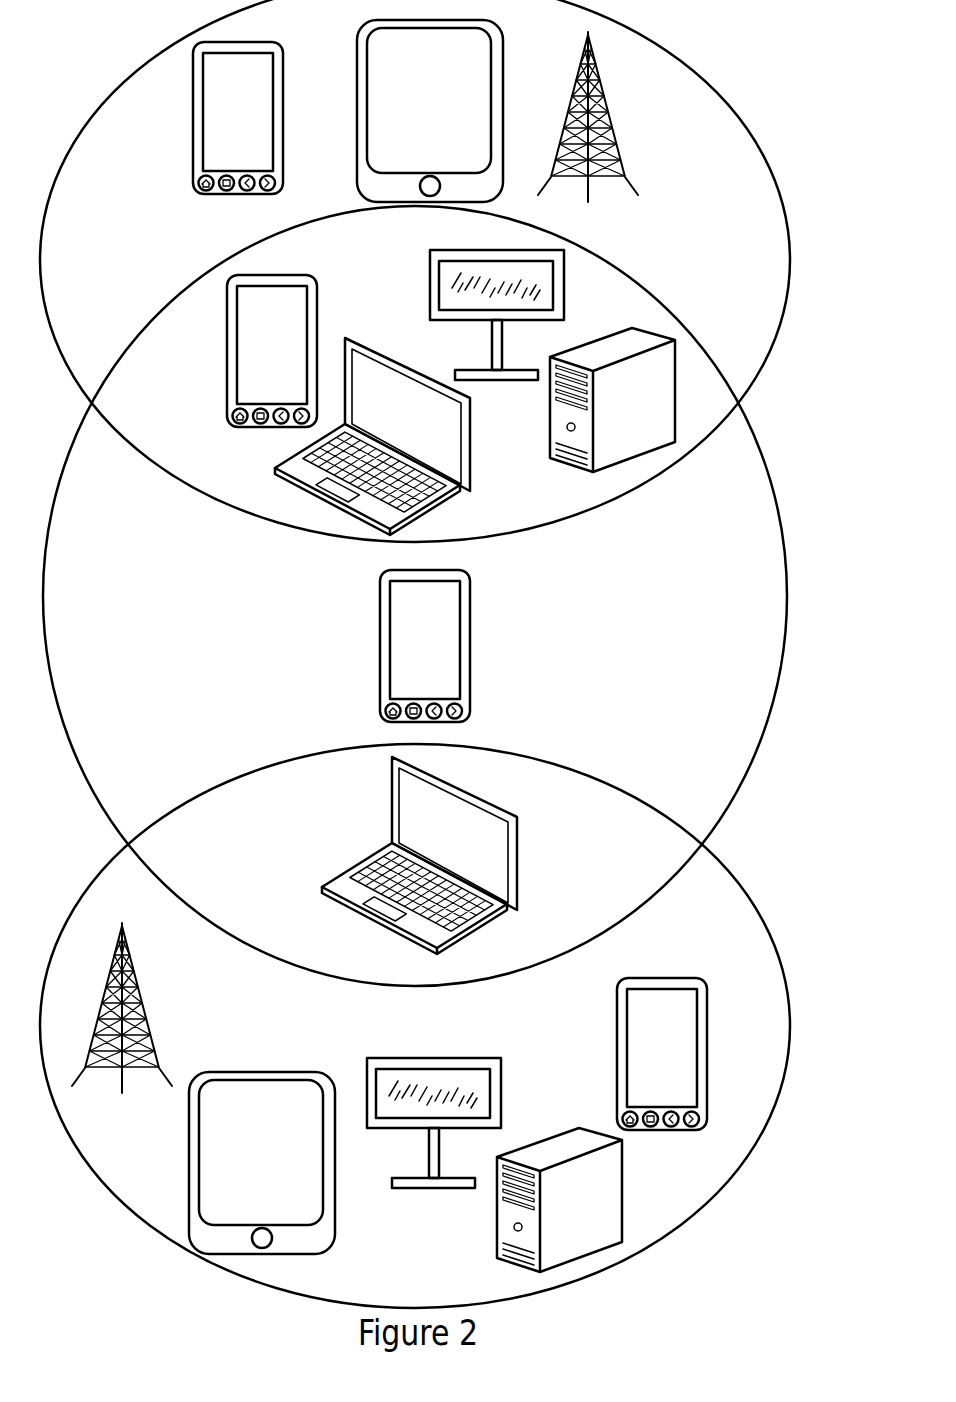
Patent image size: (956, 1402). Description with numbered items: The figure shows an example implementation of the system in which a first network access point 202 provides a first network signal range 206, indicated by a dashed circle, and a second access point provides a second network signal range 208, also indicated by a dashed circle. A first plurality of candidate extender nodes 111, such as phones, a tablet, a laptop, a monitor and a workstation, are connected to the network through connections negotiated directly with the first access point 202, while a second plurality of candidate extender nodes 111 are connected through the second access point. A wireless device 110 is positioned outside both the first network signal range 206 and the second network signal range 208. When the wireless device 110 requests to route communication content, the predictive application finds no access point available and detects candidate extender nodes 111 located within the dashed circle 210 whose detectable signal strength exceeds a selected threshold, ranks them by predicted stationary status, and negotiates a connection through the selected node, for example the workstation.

The wireless device 110 is at (450, 573).
The candidate extender nodes 111 is at (263, 42).
The first network access point 202 is at (603, 92).
The first network signal range 206 is at (732, 107).
The second network signal range 208 is at (733, 875).
The dashed circle 210 is at (768, 447).